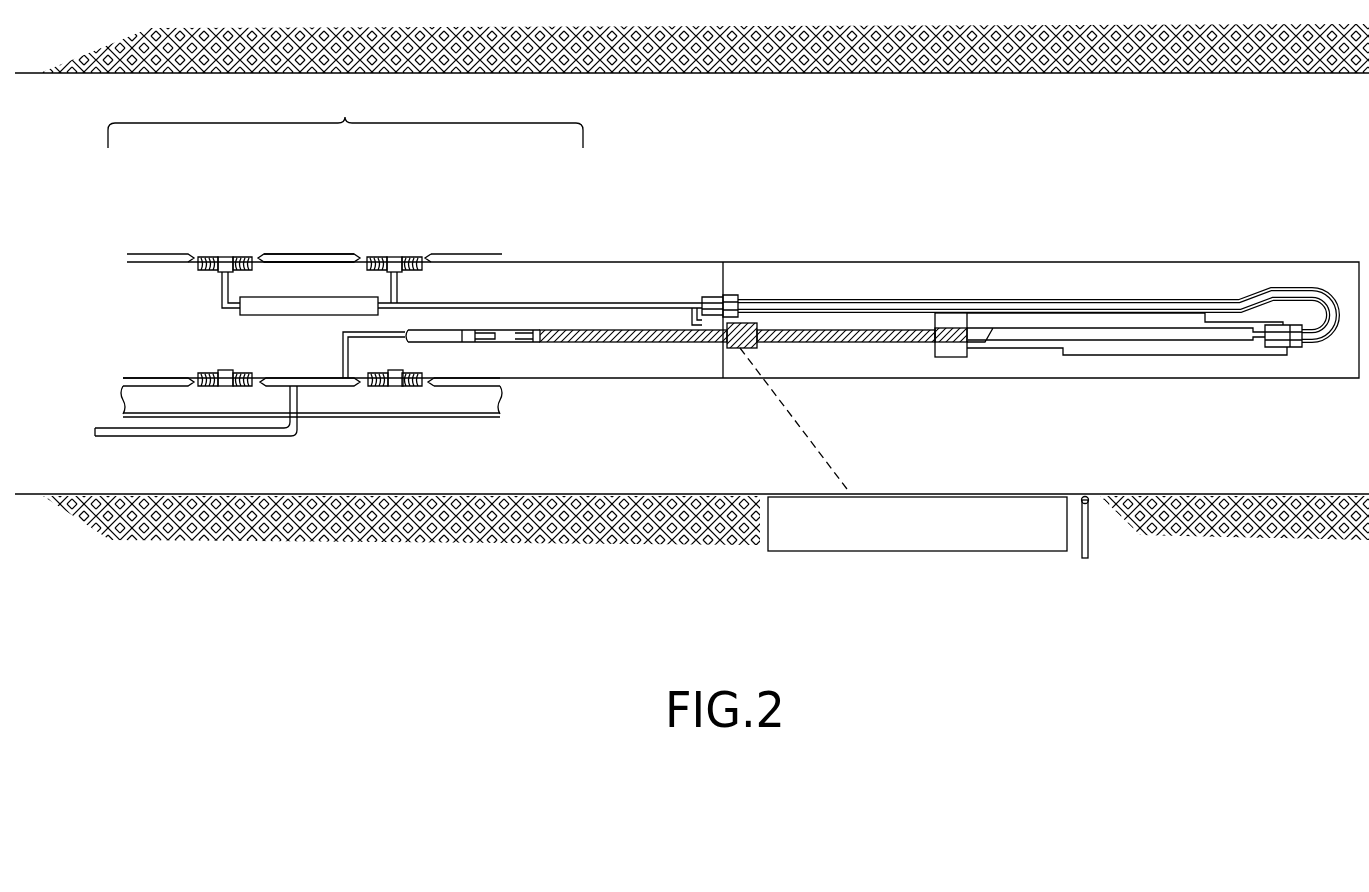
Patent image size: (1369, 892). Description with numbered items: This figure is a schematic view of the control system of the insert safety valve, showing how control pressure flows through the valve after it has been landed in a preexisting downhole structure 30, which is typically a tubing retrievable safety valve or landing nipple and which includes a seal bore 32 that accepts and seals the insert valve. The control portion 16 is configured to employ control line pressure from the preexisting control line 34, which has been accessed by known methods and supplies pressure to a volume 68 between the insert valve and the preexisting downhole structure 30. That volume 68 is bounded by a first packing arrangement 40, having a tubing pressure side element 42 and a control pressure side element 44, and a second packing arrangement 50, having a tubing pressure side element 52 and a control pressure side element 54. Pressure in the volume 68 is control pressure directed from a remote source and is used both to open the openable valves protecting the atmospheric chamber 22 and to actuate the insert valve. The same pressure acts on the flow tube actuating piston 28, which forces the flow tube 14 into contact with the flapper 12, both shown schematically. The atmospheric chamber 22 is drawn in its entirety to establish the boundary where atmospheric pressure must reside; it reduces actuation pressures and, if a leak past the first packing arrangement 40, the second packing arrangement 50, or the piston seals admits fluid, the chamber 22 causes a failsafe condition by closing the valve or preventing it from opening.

The flapper 12 is at (1088, 538).
The flow tube 14 is at (913, 552).
The control portion 16 is at (345, 114).
The atmospheric chamber 22 is at (363, 308).
The flow tube actuating piston 28 is at (627, 337).
The preexisting downhole structure 30 is at (160, 410).
The seal bore 32 is at (197, 390).
The preexisting control line 34 is at (100, 428).
The first packing arrangement 40 is at (214, 318).
The tubing pressure side element 42 is at (203, 256).
The control pressure side element 44 is at (242, 258).
The second packing arrangement 50 is at (400, 314).
The tubing pressure side element 52 is at (408, 257).
The control pressure side element 54 is at (377, 258).
The volume 68 is at (275, 253).